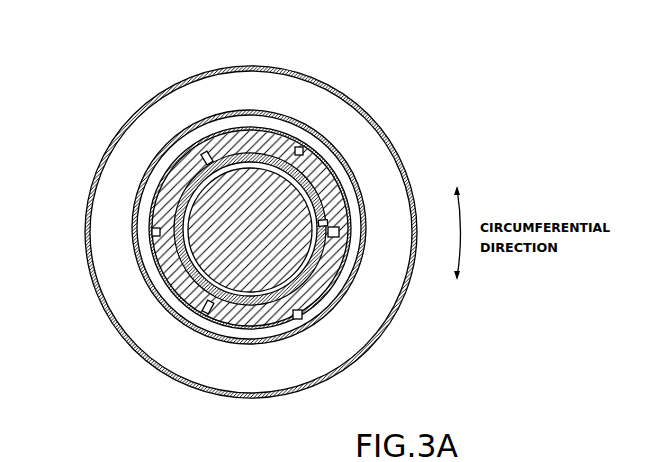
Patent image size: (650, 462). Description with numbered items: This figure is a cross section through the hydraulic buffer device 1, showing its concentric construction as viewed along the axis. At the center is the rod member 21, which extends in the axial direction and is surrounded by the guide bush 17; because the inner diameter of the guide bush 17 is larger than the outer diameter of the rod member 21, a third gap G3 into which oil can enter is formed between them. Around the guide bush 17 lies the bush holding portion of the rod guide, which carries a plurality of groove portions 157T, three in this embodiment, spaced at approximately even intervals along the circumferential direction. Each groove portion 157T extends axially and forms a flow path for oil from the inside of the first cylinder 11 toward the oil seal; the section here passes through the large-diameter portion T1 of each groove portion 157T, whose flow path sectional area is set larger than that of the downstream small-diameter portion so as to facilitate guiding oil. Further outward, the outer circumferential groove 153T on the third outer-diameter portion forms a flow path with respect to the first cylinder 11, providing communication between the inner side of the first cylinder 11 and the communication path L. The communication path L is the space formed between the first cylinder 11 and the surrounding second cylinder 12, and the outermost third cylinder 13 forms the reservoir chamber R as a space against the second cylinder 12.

The hydraulic buffer device 1 is at (136, 70).
The first cylinder 11 is at (348, 260).
The second cylinder 12 is at (358, 290).
The third cylinder 13 is at (316, 80).
The guide bush 17 is at (180, 270).
The rod member 21 is at (208, 258).
The outer circumferential groove 153T is at (301, 147).
The groove portion 157T is at (200, 150).
The large-diameter portion T1 is at (328, 205).
The reservoir chamber R is at (255, 99).
The communication path L is at (352, 278).
The third gap G3 is at (203, 298).